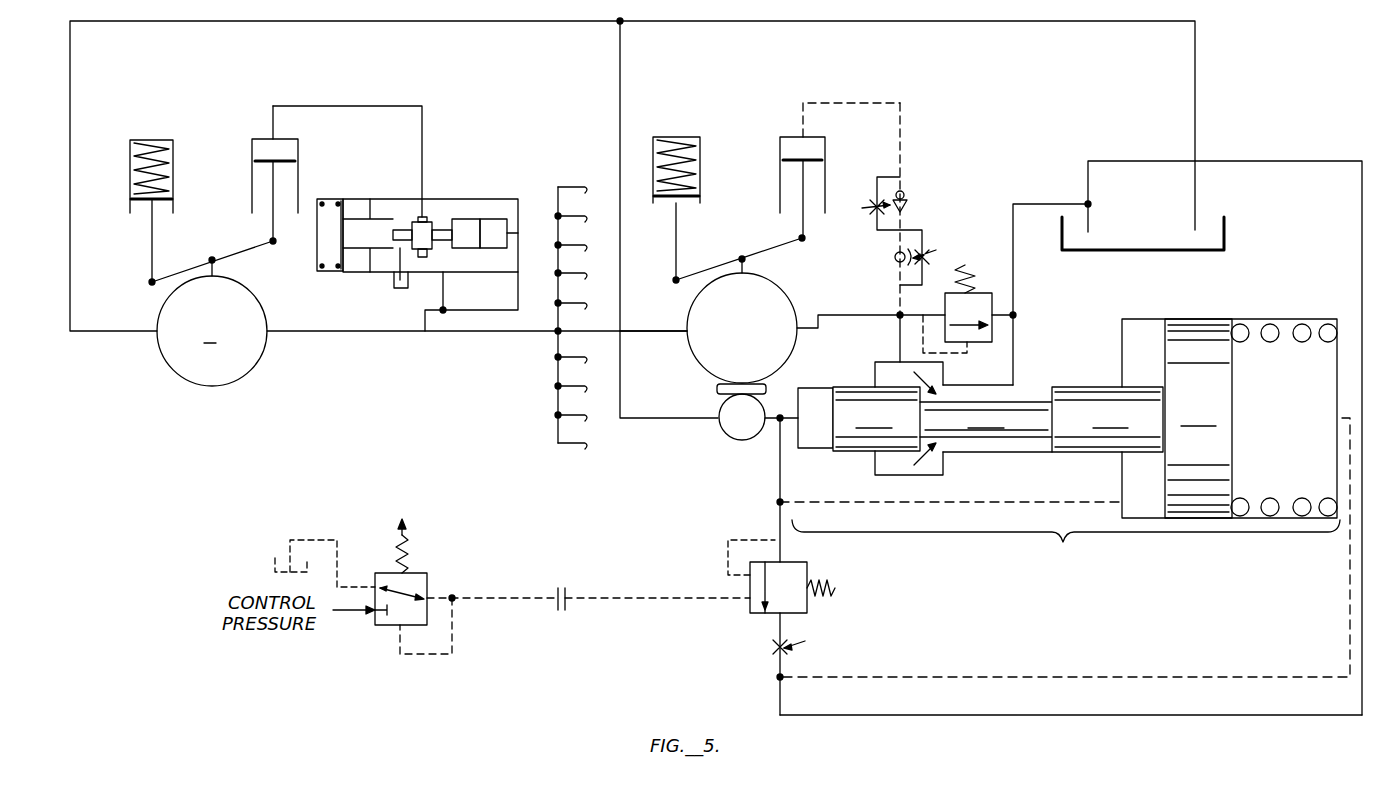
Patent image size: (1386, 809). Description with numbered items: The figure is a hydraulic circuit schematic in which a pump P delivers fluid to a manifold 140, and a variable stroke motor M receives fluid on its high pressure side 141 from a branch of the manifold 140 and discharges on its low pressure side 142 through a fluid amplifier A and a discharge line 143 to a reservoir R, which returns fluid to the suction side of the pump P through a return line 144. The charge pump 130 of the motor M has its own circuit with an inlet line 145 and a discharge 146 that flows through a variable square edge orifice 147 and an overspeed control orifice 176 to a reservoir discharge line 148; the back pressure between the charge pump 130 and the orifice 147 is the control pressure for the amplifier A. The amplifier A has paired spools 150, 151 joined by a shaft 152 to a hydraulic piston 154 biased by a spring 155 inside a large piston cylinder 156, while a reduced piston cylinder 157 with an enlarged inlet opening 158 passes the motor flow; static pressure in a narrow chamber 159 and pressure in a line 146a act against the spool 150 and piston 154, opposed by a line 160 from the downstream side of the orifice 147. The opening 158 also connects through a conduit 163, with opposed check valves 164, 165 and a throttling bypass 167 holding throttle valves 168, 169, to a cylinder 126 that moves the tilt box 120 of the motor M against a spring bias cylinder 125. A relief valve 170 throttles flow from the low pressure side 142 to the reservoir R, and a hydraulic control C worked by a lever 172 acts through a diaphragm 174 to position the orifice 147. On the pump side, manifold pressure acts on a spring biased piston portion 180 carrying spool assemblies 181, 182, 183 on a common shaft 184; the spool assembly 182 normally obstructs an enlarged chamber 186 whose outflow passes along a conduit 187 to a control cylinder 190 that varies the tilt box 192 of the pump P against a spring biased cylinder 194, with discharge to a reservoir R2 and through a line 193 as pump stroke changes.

The return line 144 is at (918, 21).
The inlet line 145 is at (621, 45).
The spring biased cylinder 194 is at (165, 140).
The control cylinder 190 is at (285, 139).
The conduit 187 is at (424, 106).
The tilt box 192 is at (235, 252).
The pump P is at (212, 331).
The spring biased piston portion 180 is at (328, 258).
The spool assembly 181 is at (360, 247).
The enlarged chamber 186 is at (423, 190).
The spool assembly 182 is at (425, 228).
The common shaft 184 is at (400, 230).
The spool assembly 183 is at (465, 246).
The reservoir R2 is at (388, 287).
The conduit 193 is at (424, 307).
The manifold 140 is at (556, 382).
The spring bias cylinder 125 is at (690, 137).
The cylinder 126 is at (815, 137).
The tilt box 120 is at (767, 249).
The motor M is at (685, 345).
The high pressure side 141 is at (668, 325).
The charge pump 130 is at (733, 436).
The discharge 146 is at (773, 415).
The low pressure side 142 is at (892, 318).
The conduit 163 is at (898, 302).
The throttle valve 169 is at (858, 205).
The check valve 165 is at (908, 203).
The check valve 164 is at (893, 255).
The throttle valve 168 is at (934, 246).
The throttling bypass 167 is at (926, 228).
The relief valve 170 is at (970, 342).
The discharge line 143 is at (1015, 292).
The reservoir R is at (1226, 236).
The narrow chamber 159 is at (805, 455).
The spool 150 is at (876, 419).
The enlarged inlet opening 158 is at (895, 475).
The shaft 152 is at (986, 419).
The reduced piston cylinder 157 is at (978, 455).
The spool 151 is at (1107, 419).
The hydraulic piston 154 is at (1229, 418).
The spring 155 is at (1296, 497).
The large piston cylinder 156 is at (1130, 515).
The pressure line 146a is at (795, 500).
The fluid amplifier A is at (1066, 546).
The variable pressure hydraulic control C is at (393, 628).
The lever 172 is at (409, 530).
The diaphragm 174 is at (566, 586).
The variable square edge orifice 147 is at (744, 606).
The overspeed control orifice 176 is at (767, 663).
The line 160 is at (965, 670).
The reservoir discharge line 148 is at (962, 712).